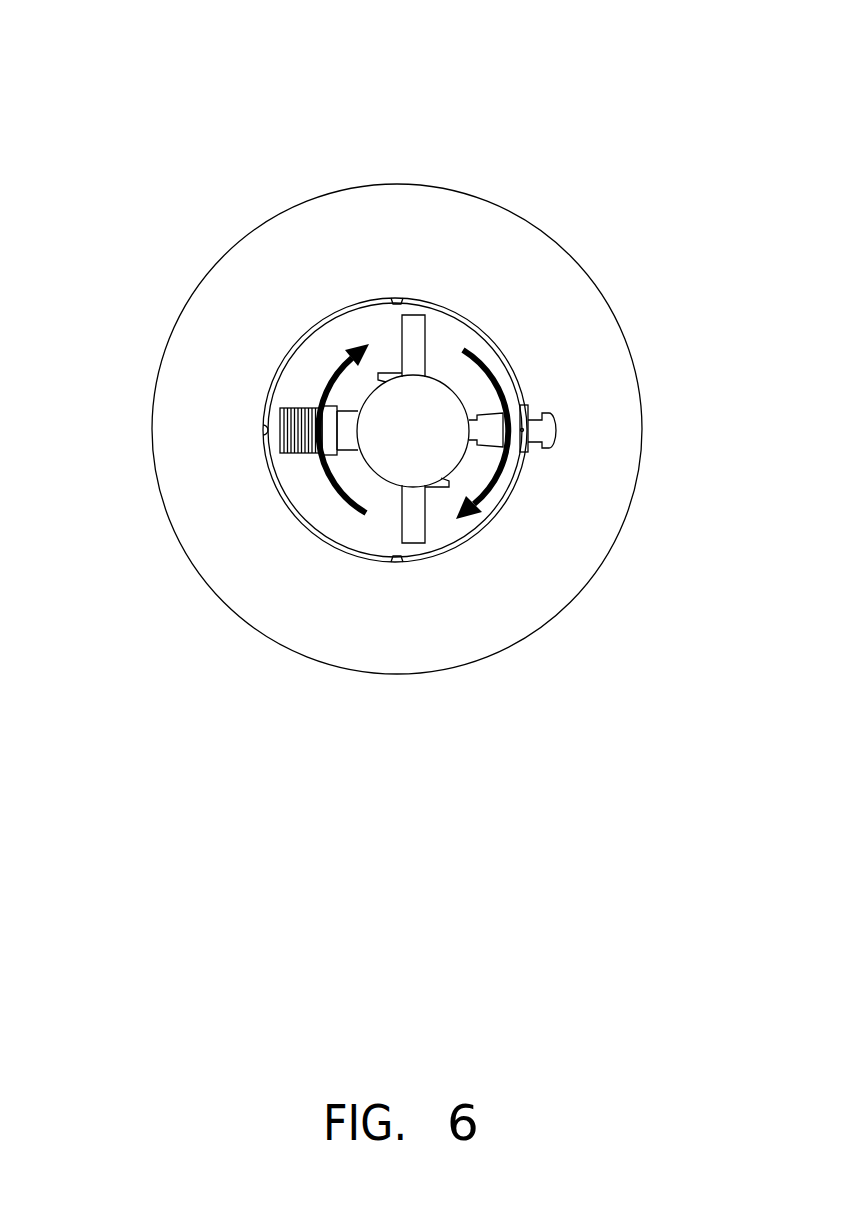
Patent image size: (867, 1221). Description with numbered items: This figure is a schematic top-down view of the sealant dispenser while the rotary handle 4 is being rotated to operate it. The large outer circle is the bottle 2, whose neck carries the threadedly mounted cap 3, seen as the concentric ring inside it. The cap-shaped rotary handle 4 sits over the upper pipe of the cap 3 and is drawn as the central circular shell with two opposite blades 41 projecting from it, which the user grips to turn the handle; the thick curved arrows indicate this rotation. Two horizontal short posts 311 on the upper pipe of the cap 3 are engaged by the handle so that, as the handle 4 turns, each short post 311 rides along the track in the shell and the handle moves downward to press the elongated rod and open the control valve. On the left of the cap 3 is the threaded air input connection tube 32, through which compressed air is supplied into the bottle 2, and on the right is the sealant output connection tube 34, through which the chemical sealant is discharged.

The bottle 2 is at (388, 633).
The cap 3 is at (323, 502).
The rotary handle 4 is at (430, 424).
The blades 41 is at (417, 333).
The short post 311 is at (390, 372).
The air input connection tube 32 is at (300, 425).
The sealant output connection tube 34 is at (492, 432).